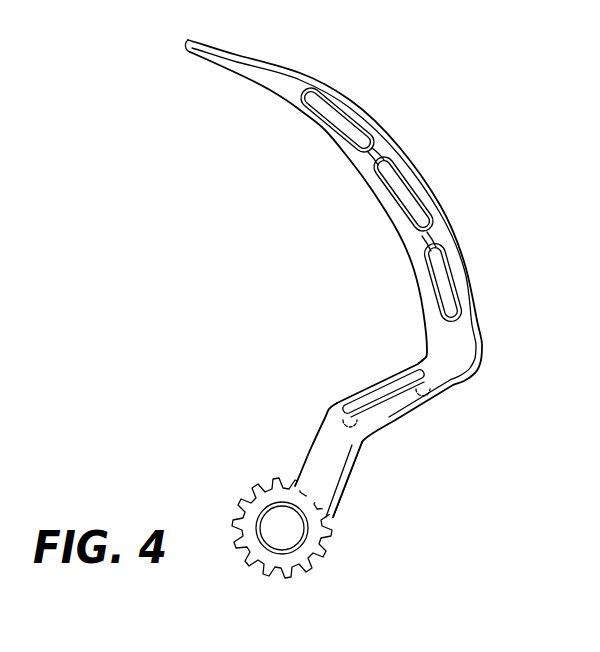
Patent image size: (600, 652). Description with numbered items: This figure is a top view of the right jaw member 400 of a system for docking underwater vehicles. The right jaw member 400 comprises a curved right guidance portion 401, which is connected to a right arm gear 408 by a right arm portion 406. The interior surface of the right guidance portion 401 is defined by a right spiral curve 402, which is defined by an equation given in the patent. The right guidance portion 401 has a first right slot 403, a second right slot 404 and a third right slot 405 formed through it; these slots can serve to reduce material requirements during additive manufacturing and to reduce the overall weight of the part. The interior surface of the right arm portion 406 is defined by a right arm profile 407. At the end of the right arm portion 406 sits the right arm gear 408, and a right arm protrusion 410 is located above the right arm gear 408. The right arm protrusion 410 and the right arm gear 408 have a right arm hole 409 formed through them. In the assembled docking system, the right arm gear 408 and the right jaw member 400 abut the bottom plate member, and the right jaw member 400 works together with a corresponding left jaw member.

The right jaw member 400 is at (140, 128).
The right guidance portion 401 is at (457, 344).
The right spiral curve 402 is at (421, 362).
The first right slot 403 is at (341, 124).
The second right slot 404 is at (414, 192).
The third right slot 405 is at (441, 262).
The right arm portion 406 is at (328, 472).
The right arm profile 407 is at (400, 343).
The right arm gear 408 is at (268, 481).
The right arm hole 409 is at (285, 527).
The right arm protrusion 410 is at (300, 553).